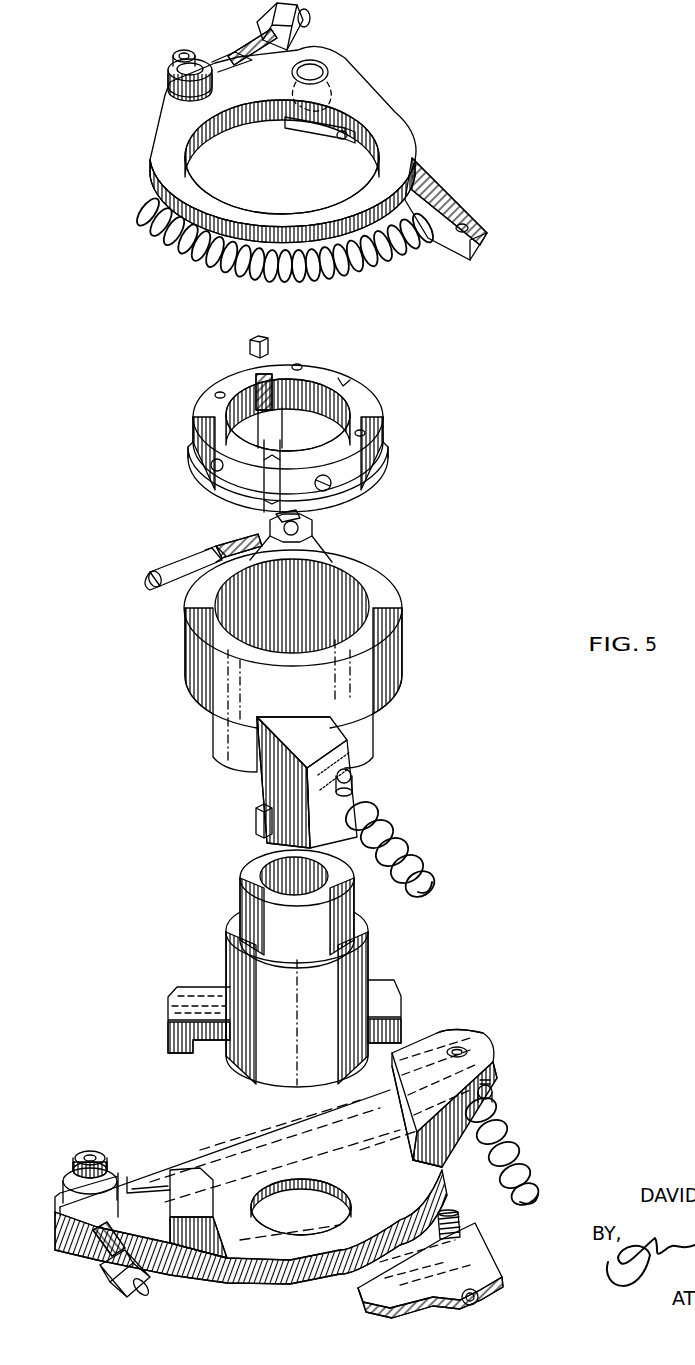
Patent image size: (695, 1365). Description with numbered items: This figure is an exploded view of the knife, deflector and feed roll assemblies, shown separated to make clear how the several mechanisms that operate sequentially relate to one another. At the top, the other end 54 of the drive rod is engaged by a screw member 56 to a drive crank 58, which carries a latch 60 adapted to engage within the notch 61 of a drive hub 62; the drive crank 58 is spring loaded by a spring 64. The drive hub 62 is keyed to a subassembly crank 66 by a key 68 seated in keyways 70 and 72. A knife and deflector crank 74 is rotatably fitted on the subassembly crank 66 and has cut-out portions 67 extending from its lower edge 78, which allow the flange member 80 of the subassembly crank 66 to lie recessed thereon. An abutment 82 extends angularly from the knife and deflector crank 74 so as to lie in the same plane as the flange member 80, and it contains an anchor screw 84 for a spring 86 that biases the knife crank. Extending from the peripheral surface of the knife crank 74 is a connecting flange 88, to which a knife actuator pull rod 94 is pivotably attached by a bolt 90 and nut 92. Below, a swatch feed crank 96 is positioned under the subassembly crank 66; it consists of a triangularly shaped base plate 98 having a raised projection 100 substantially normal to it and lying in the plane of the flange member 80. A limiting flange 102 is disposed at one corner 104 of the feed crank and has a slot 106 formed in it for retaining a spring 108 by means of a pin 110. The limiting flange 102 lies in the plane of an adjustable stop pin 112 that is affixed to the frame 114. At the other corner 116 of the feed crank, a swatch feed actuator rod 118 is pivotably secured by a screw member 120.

The other end of drive rod 54 is at (300, 32).
The screw member 56 is at (250, 50).
The drive crank 58 is at (144, 126).
The latch 60 is at (336, 138).
The notch 61 is at (345, 385).
The drive hub 62 is at (372, 410).
The spring 64 is at (210, 272).
The subassembly crank 66 is at (388, 946).
The cut-out portions 67 is at (210, 726).
The key 68 is at (248, 347).
The keyway 70 is at (268, 382).
The keyway 72 is at (270, 862).
The knife and deflector crank 74 is at (416, 622).
The lower edge 78 is at (236, 768).
The flange member 80 is at (196, 990).
The abutment 82 is at (262, 786).
The anchor screw 84 is at (360, 774).
The spring 86 is at (398, 826).
The connecting flange 88 is at (318, 535).
The bolt 90 is at (280, 520).
The nut 92 is at (255, 540).
The knife actuator pull rod 94 is at (140, 558).
The swatch feed crank 96 is at (226, 1114).
The base plate 98 is at (228, 1158).
The raised projection 100 is at (178, 1160).
The limiting flange 102 is at (470, 1036).
The corner 104 is at (514, 1054).
The slot 106 is at (495, 1090).
The spring 108 is at (515, 1126).
The pin 110 is at (455, 1045).
The adjustable stop pin 112 is at (466, 1215).
The frame 114 is at (488, 1255).
The other corner 116 is at (36, 1189).
The swatch feed actuator rod 118 is at (105, 1280).
The screw member 120 is at (86, 1152).